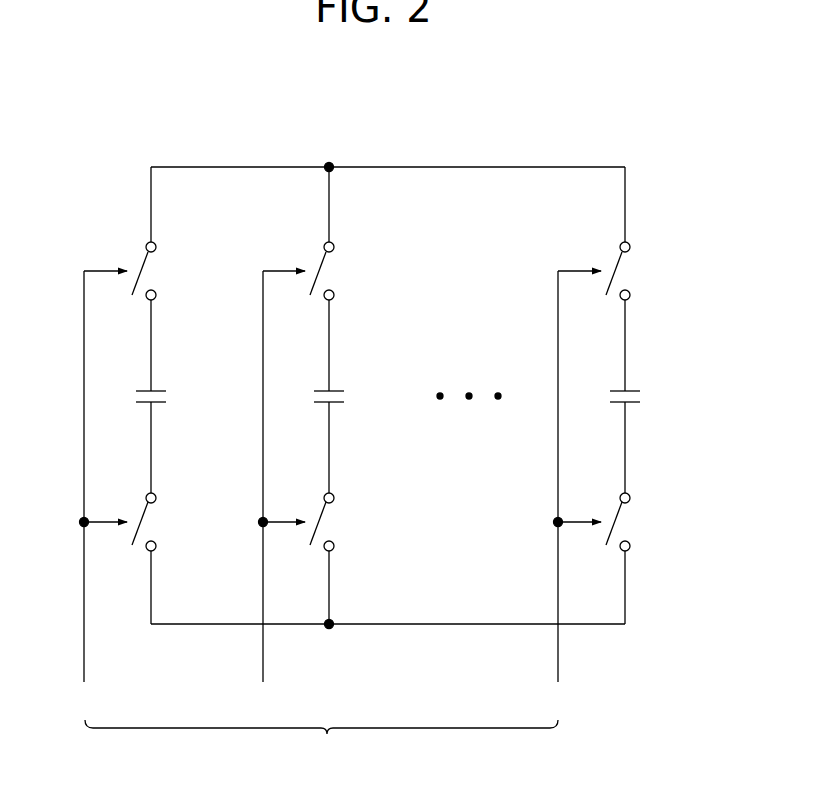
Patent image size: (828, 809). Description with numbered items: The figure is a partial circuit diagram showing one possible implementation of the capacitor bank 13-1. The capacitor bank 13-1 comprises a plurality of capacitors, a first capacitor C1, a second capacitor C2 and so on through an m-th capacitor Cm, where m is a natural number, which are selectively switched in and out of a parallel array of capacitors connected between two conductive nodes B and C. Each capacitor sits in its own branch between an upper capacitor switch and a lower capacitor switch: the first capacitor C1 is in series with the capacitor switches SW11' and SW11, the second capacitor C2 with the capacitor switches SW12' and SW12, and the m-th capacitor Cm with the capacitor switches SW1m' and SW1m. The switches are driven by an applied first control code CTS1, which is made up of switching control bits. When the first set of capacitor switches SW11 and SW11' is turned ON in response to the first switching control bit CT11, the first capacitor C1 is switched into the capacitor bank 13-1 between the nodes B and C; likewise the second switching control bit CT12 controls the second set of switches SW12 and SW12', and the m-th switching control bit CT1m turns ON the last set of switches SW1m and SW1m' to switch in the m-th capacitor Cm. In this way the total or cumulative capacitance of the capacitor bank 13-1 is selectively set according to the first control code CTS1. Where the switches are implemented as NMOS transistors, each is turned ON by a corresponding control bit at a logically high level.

The capacitor bank 13-1 is at (553, 132).
The conductive node B is at (329, 188).
The conductive node C is at (329, 604).
The capacitor switch SW11' is at (182, 271).
The capacitor switch SW12' is at (359, 271).
The capacitor switch SW1m' is at (660, 271).
The first capacitor C1 is at (169, 396).
The second capacitor C2 is at (347, 396).
The m-th capacitor Cm is at (646, 396).
The capacitor switch SW11 is at (179, 522).
The capacitor switch SW12 is at (357, 522).
The capacitor switch SW1m is at (657, 522).
The first switching control bit CT11 is at (92, 492).
The second switching control bit CT12 is at (270, 492).
The m-th switching control bit CT1m is at (563, 492).
The first control code CTS1 is at (321, 742).